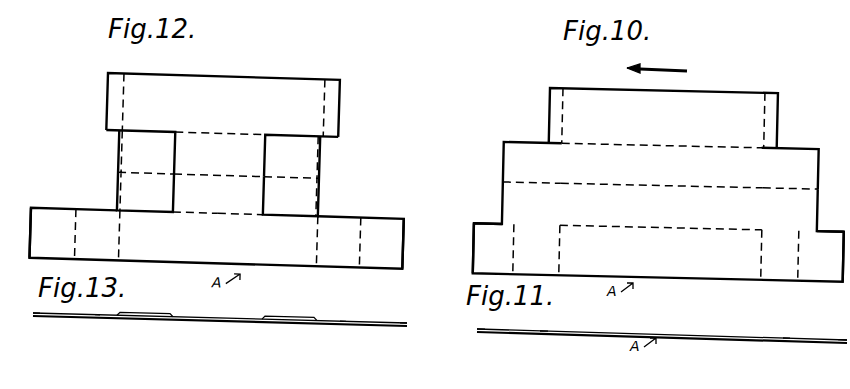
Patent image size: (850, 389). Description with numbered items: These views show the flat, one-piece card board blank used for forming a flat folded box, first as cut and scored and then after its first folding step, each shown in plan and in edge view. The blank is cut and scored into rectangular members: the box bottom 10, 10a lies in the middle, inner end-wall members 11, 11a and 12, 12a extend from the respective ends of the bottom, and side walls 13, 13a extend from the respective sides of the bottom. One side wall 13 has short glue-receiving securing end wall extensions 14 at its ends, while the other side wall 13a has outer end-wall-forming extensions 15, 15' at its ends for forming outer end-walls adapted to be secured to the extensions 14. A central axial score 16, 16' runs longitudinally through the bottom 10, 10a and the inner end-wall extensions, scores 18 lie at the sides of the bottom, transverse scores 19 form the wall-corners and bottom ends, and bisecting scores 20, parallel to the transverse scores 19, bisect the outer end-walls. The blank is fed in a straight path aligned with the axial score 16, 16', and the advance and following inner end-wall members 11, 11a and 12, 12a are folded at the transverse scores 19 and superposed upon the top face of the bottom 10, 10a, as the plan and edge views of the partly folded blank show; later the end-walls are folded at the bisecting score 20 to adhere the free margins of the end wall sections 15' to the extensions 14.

In FIG. 12, the box bottom 10 is at (220, 145).
In FIG. 10, the box bottom 10 is at (662, 162).
In FIG. 12, the box bottom 10a is at (196, 195).
In FIG. 10, the box bottom 10a is at (619, 212).
In FIG. 12, the inner end-wall member 11 is at (170, 128).
In FIG. 10, the inner end-wall member 11 is at (532, 162).
In FIG. 12, the inner end-wall member 11a is at (148, 208).
In FIG. 13, the inner end-wall member 11a is at (150, 312).
In FIG. 10, the inner end-wall member 11a is at (509, 203).
In FIG. 12, the inner end-wall member 12 is at (274, 128).
In FIG. 10, the inner end-wall member 12 is at (790, 168).
In FIG. 12, the inner end-wall member 12a is at (273, 208).
In FIG. 13, the inner end-wall member 12a is at (303, 316).
In FIG. 10, the inner end-wall member 12a is at (810, 210).
In FIG. 12, the side wall 13 is at (223, 105).
In FIG. 10, the side wall 13 is at (663, 118).
In FIG. 12, the side wall 13a is at (216, 238).
In FIG. 13, the side wall 13a is at (238, 318).
In FIG. 10, the side wall 13a is at (658, 252).
In FIG. 11, the side wall 13a is at (711, 336).
In FIG. 12, the securing end wall extension 14 is at (108, 92).
In FIG. 10, the securing end wall extension 14 is at (550, 101).
In FIG. 12, the outer end-wall-forming extension 15 is at (215, 237).
In FIG. 13, the outer end-wall-forming extension 15 is at (218, 316).
In FIG. 10, the outer end-wall-forming extension 15 is at (657, 252).
In FIG. 11, the outer end-wall-forming extension 15 is at (665, 323).
In FIG. 12, the outer end-wall section 15' is at (216, 238).
In FIG. 13, the outer end-wall section 15' is at (220, 316).
In FIG. 10, the outer end-wall section 15' is at (658, 252).
In FIG. 11, the outer end-wall section 15' is at (651, 327).
In FIG. 12, the central axial score 16 is at (219, 161).
In FIG. 10, the central axial score 16 is at (662, 176).
In FIG. 12, the central axial score 16' is at (218, 173).
In FIG. 10, the central axial score 16' is at (656, 172).
In FIG. 12, the score 18 is at (230, 210).
In FIG. 10, the score 18 is at (692, 228).
In FIG. 12, the transverse score 19 is at (322, 250).
In FIG. 10, the transverse score 19 is at (762, 263).
In FIG. 12, the bisecting score 20 is at (82, 252).
In FIG. 10, the bisecting score 20 is at (521, 266).